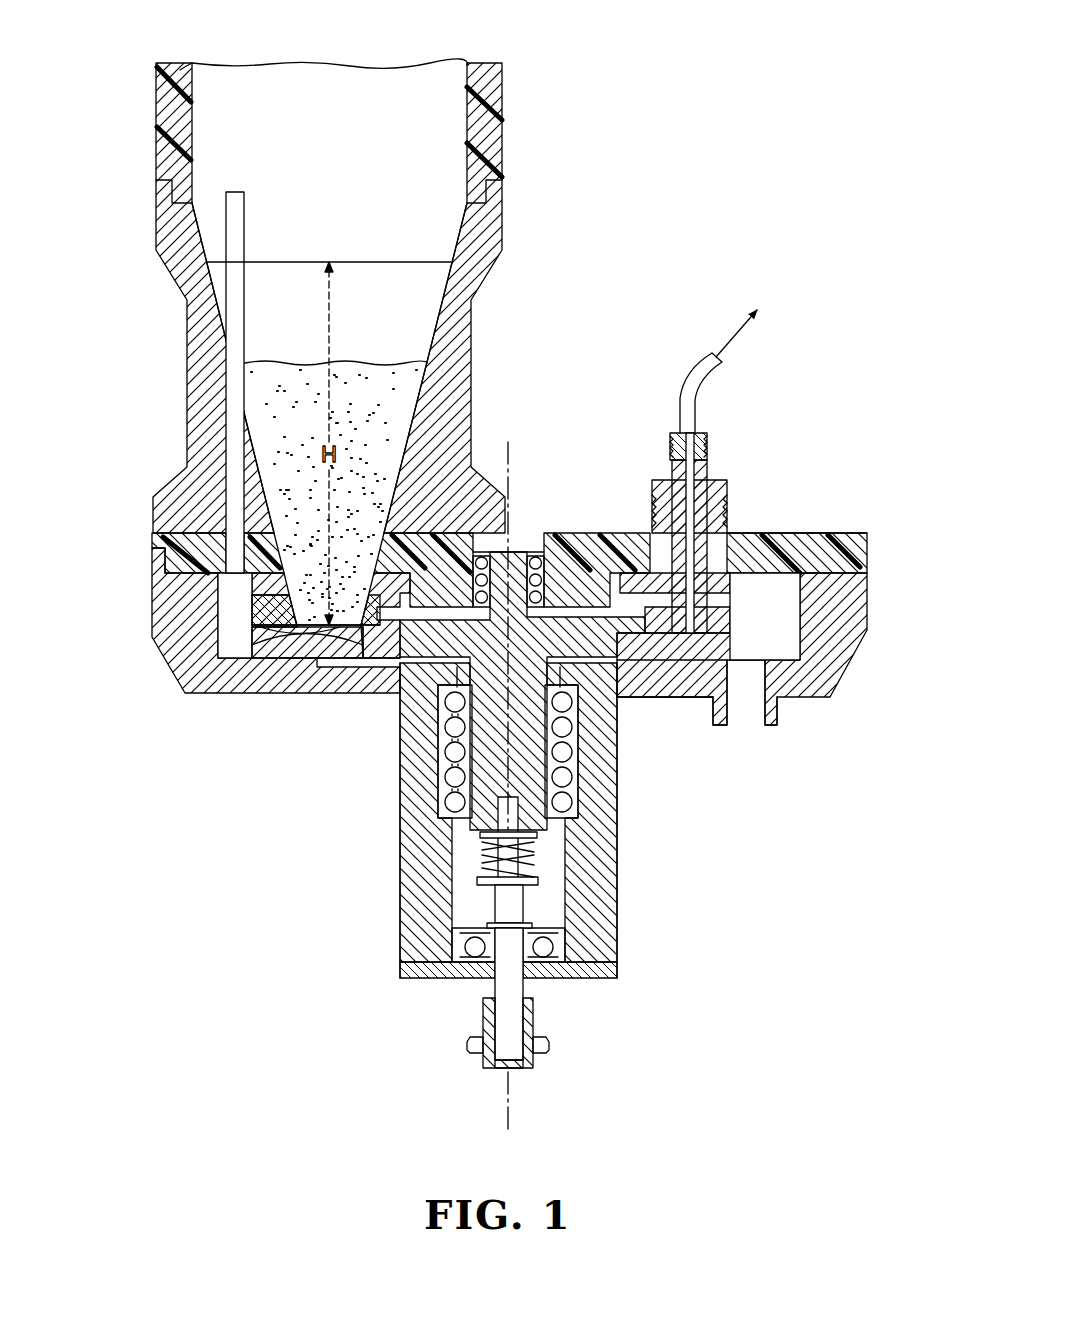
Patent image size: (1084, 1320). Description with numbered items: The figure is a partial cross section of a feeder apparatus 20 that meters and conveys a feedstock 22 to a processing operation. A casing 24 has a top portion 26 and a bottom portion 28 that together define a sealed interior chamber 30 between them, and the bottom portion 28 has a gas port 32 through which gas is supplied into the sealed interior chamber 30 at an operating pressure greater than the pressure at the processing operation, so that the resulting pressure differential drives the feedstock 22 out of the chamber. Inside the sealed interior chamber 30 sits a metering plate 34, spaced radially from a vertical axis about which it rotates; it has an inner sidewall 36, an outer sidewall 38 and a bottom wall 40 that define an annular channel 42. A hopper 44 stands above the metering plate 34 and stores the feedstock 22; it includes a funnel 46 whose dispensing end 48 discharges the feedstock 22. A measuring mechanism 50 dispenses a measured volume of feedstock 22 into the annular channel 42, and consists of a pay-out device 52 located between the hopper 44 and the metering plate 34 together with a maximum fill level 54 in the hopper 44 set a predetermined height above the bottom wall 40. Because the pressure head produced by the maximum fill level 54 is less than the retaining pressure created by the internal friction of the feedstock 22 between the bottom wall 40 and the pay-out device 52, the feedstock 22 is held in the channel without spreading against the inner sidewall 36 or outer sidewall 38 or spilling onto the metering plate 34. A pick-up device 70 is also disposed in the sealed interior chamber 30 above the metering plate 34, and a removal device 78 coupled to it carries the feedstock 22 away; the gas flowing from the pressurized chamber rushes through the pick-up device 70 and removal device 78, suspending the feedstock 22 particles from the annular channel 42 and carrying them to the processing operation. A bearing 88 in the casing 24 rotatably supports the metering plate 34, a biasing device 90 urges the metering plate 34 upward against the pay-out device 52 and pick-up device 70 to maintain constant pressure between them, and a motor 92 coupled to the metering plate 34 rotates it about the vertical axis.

The feeder apparatus 20 is at (723, 96).
The feedstock 22 is at (398, 362).
The casing 24 is at (867, 562).
The top portion 26 is at (795, 533).
The bottom portion 28 is at (667, 697).
The sealed interior chamber 30 is at (800, 637).
The gas port 32 is at (757, 713).
The metering plate 34 is at (373, 633).
The inner sidewall 36 is at (358, 635).
The outer sidewall 38 is at (310, 622).
The bottom wall 40 is at (325, 632).
The annular channel 42 is at (258, 590).
The hopper 44 is at (502, 135).
The funnel 46 is at (472, 355).
The dispensing end 48 is at (352, 612).
The measuring mechanism 50 is at (230, 570).
The pay-out device 52 is at (400, 625).
The maximum fill level 54 is at (371, 262).
The pick-up device 70 is at (740, 615).
The removal device 78 is at (713, 477).
The bearing 88 is at (540, 552).
The biasing device 90 is at (537, 853).
The motor 92 is at (530, 1025).